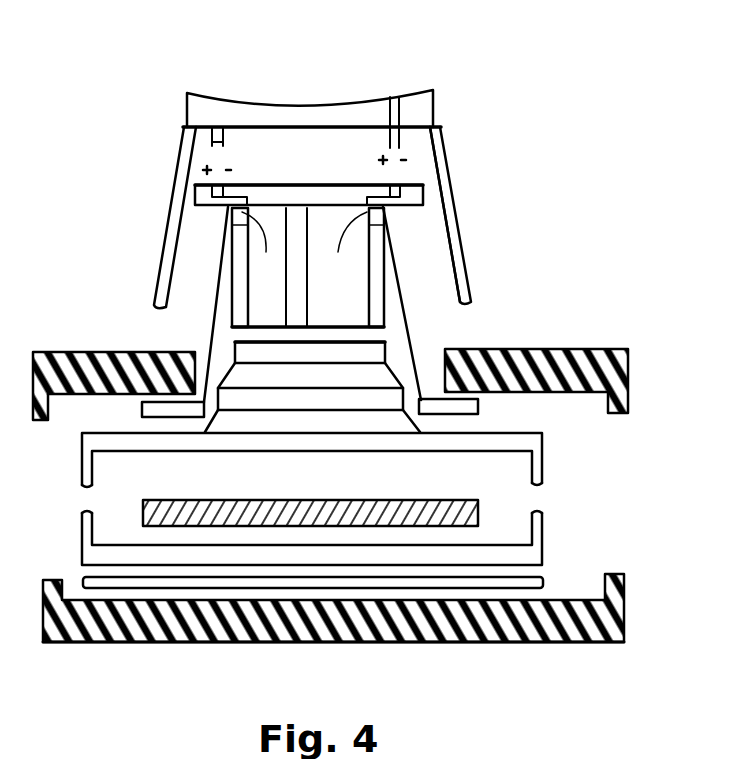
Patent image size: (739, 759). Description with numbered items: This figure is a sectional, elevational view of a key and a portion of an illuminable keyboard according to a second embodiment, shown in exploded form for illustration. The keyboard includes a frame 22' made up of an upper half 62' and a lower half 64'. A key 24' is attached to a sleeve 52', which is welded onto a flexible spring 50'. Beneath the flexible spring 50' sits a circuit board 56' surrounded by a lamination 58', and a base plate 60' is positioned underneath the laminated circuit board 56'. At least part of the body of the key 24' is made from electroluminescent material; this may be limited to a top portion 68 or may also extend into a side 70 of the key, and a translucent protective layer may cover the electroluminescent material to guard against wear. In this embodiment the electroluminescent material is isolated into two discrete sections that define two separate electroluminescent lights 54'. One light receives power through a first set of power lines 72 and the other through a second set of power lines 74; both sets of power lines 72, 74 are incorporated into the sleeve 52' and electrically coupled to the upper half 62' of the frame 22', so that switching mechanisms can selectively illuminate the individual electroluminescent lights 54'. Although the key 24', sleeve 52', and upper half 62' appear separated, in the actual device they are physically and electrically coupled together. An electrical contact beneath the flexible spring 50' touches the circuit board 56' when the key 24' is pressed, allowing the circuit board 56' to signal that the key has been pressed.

The frame 22' is at (333, 646).
The key 24' is at (312, 67).
The flexible spring 50' is at (336, 371).
The sleeve 52' is at (310, 301).
The electroluminescent lights 54' is at (305, 183).
The circuit board 56' is at (332, 497).
The lamination 58' is at (352, 499).
The base plate 60' is at (354, 559).
The upper half 62' is at (330, 341).
The lower half 64' is at (333, 674).
The top portion 68 is at (340, 125).
The side 70 is at (449, 182).
The first set of power lines 72 is at (390, 132).
The second set of power lines 74 is at (223, 141).